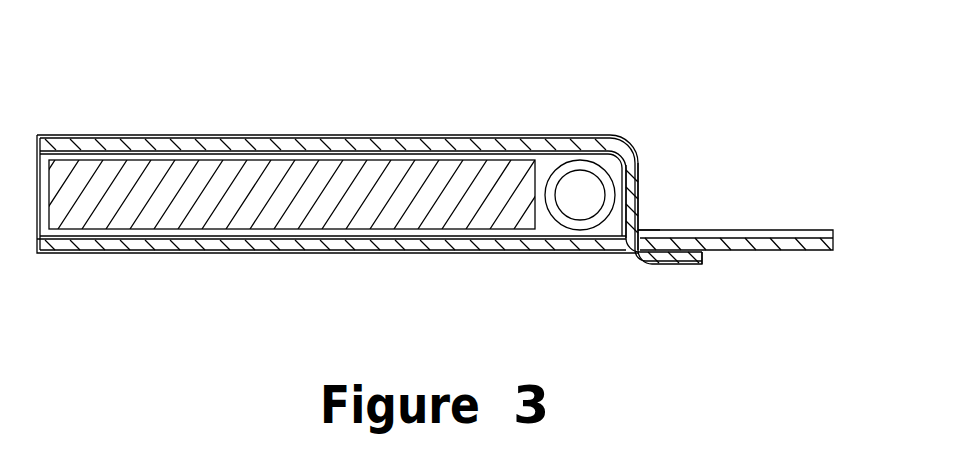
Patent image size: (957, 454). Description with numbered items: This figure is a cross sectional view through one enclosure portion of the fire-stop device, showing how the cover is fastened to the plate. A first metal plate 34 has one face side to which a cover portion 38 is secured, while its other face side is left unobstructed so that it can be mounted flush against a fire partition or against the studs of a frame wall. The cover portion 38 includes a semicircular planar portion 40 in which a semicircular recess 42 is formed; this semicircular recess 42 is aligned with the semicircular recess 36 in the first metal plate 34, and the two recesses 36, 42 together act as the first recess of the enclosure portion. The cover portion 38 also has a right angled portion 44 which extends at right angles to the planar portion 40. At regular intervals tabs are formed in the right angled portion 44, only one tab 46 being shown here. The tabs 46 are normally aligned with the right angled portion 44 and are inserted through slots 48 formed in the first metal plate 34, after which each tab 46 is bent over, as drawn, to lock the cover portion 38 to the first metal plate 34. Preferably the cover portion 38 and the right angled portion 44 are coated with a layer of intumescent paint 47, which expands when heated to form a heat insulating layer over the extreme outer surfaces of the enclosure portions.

The first metal plate 34 is at (755, 238).
The semicircular recess 36 is at (80, 255).
The cover portion 38 is at (485, 142).
The semicircular planar portion 40 is at (210, 139).
The semicircular recess 42 is at (88, 140).
The right angled portion 44 is at (639, 185).
The tab 46 is at (685, 266).
The layer of intumescent paint 47 is at (272, 140).
The slot 48 is at (639, 229).